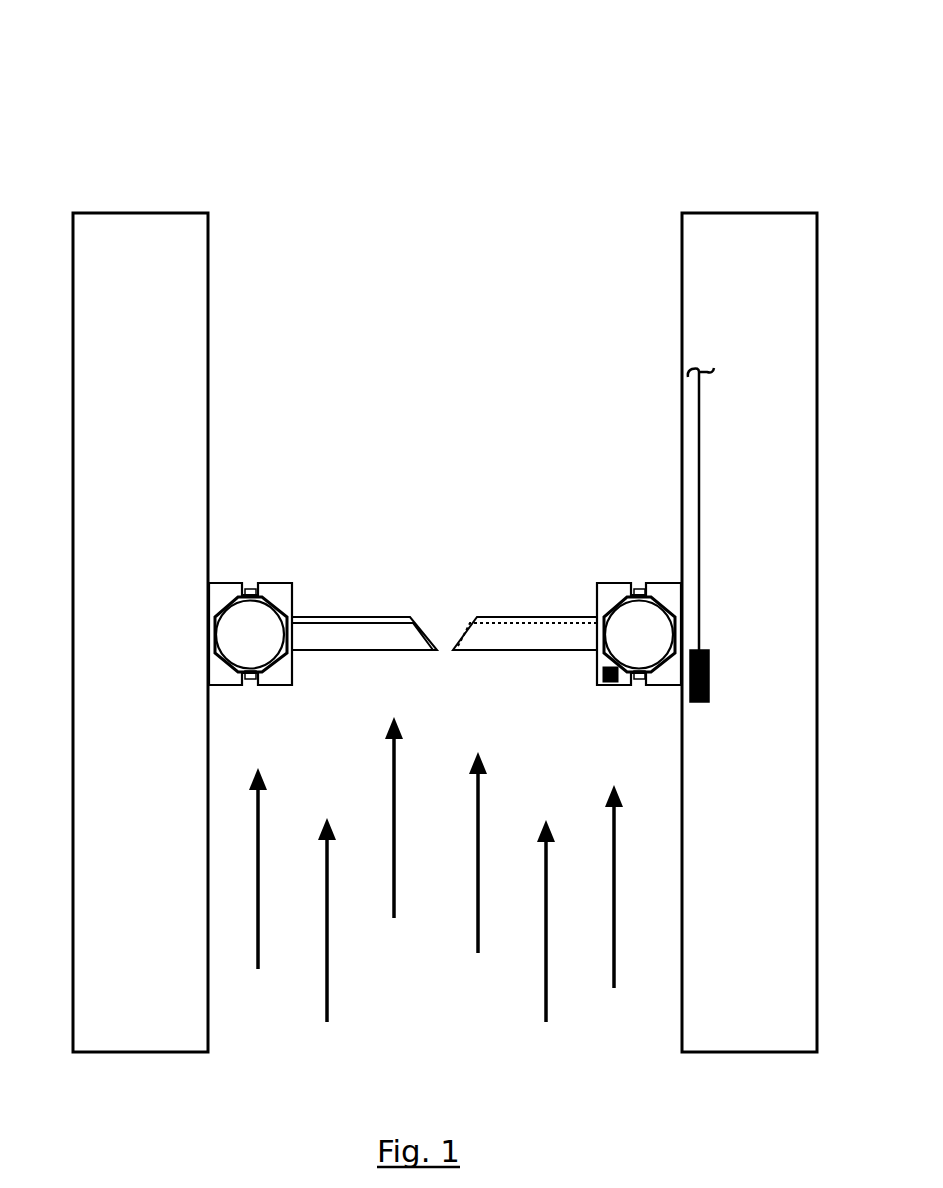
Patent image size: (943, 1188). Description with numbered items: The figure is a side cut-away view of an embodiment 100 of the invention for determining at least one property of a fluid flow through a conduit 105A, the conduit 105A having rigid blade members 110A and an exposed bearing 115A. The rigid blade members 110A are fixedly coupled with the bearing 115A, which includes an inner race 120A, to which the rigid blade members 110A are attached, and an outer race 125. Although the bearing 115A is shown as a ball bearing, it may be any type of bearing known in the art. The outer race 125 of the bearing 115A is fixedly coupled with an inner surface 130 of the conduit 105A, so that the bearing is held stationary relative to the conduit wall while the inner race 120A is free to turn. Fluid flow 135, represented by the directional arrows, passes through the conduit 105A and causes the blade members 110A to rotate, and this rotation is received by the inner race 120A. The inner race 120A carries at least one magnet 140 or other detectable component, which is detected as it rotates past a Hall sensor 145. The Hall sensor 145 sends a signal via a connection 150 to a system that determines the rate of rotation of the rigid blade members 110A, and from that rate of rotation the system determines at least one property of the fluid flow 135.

The embodiment 100 is at (140, 72).
The conduit 105A is at (104, 213).
The inner surface 130 is at (682, 288).
The connection 150 is at (699, 398).
The Hall sensor 145 is at (690, 697).
The magnet 140 is at (603, 676).
The outer race 125 is at (228, 584).
The inner race 120A is at (281, 584).
The rigid blade members 110A is at (488, 608).
The bearing 115A is at (608, 576).
The fluid flow 135 is at (338, 978).